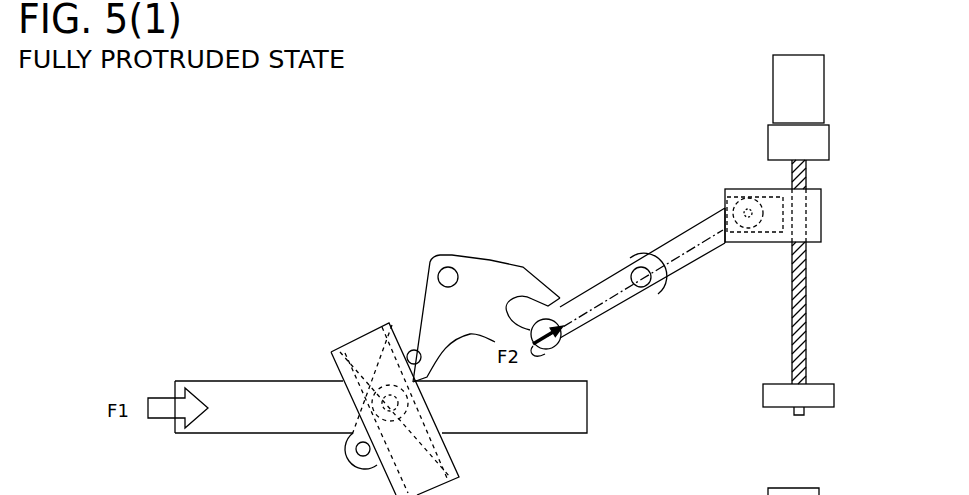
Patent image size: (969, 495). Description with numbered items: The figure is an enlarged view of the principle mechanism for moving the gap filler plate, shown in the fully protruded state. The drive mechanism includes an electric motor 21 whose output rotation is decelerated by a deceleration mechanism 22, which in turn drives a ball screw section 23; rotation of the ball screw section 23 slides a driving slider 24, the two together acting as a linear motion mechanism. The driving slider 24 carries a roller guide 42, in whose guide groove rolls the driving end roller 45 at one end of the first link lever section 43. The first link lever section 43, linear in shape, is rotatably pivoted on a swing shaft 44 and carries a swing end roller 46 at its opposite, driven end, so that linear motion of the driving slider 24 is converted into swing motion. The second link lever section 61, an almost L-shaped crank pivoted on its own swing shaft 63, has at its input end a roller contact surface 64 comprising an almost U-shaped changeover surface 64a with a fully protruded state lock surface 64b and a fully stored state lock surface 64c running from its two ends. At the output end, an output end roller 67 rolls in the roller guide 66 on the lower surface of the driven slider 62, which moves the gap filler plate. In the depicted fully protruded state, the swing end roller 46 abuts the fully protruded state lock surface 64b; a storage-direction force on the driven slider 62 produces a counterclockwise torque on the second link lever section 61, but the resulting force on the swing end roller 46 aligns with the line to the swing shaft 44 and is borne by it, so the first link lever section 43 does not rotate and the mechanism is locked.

The electric motor 21 is at (820, 90).
The deceleration mechanism 22 is at (828, 143).
The ball screw section 23 is at (803, 287).
The driving slider 24 is at (815, 217).
The roller guide 42 is at (765, 205).
The first link lever section 43 is at (680, 267).
The swing shaft 44 is at (643, 287).
The driving end roller 45 is at (725, 202).
The swing end roller 46 is at (557, 345).
The second link lever section 61 is at (415, 288).
The driven slider 62 is at (258, 380).
The swing shaft 63 is at (431, 262).
The roller contact surface 64 is at (568, 288).
The changeover surface 64a is at (519, 298).
The fully protruded state lock surface 64b is at (547, 355).
The fully stored state lock surface 64c is at (560, 298).
The roller guide 66 is at (352, 347).
The output end roller 67 is at (397, 417).